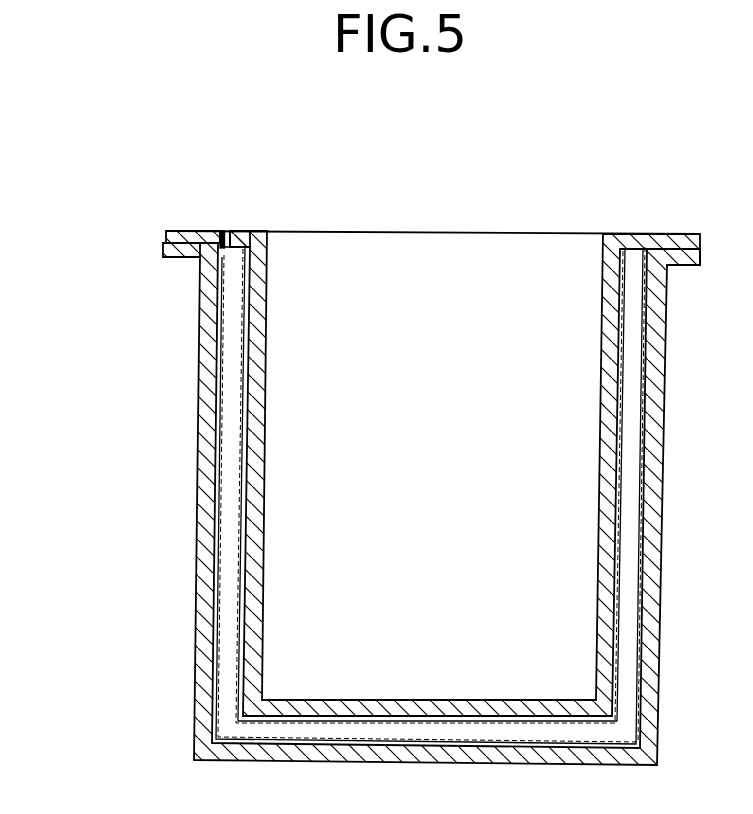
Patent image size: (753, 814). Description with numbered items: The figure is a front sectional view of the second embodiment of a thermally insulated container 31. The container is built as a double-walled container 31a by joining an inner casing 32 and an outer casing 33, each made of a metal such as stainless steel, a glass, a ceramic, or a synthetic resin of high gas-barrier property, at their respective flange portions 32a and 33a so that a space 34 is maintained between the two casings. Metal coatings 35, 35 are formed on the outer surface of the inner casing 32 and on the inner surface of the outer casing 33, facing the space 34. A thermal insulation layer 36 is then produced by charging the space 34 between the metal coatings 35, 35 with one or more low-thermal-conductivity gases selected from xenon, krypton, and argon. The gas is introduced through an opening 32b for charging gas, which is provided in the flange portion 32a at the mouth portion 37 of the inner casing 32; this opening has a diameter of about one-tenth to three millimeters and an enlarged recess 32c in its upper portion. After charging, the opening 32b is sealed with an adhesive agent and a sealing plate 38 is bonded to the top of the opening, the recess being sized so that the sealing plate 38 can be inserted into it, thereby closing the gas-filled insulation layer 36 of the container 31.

The thermally insulated container 31 is at (510, 212).
The double-walled container 31a is at (97, 420).
The inner casing 32 is at (250, 485).
The flange portion 32a is at (192, 231).
The opening for charging gas 32b is at (240, 249).
The slot of inner cup 32c is at (253, 231).
The outer casing 33 is at (199, 445).
The flange portion 33a is at (178, 262).
The space 34 is at (235, 568).
The metal coating 35 is at (238, 645).
The thermal insulation layer 36 is at (230, 697).
The mouth portion 37 is at (578, 233).
The sealing plate 38 is at (232, 231).